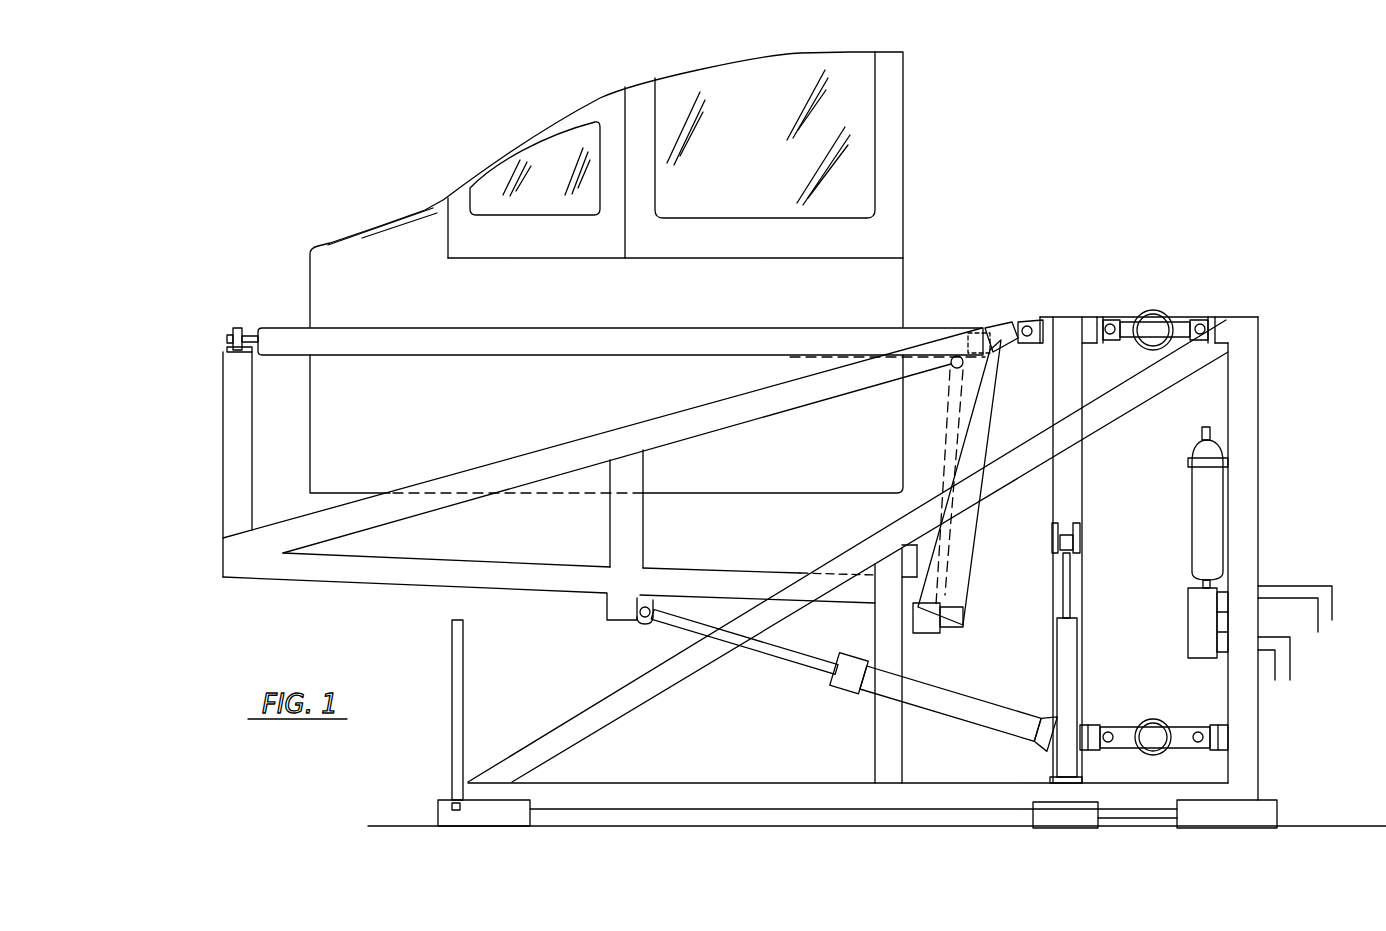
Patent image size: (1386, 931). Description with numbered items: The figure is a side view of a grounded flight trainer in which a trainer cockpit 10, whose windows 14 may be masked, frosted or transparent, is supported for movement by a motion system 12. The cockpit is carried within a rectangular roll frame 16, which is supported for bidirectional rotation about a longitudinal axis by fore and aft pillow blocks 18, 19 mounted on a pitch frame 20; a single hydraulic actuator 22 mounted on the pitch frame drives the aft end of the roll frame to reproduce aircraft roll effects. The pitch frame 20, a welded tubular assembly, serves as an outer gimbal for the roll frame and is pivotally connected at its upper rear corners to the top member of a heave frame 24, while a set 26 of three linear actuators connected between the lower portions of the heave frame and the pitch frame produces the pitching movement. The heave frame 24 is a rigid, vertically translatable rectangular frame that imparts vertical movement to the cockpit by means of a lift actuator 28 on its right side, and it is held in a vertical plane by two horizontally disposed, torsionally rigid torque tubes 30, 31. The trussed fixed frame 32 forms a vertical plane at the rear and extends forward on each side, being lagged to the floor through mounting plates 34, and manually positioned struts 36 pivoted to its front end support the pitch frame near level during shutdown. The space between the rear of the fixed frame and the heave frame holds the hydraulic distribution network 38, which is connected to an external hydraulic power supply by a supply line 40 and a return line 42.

The trainer cockpit 10 is at (645, 311).
The motion system 12 is at (782, 557).
The windows 14 is at (553, 201).
The roll frame 16 is at (287, 335).
The pillow block 18 is at (236, 328).
The pillow block 19 is at (983, 327).
The pitch frame 20 is at (633, 543).
The hydraulic actuator 22 is at (950, 583).
The heave frame 24 is at (1072, 466).
The set of linear actuators 26 is at (940, 697).
The lift actuator 28 is at (1068, 675).
The torque tube 30 is at (1163, 310).
The torque tube 31 is at (1150, 717).
The fixed frame 32 is at (1247, 388).
The mounting plates 34 is at (440, 823).
The strut 36 is at (463, 677).
The distribution network 38 is at (1180, 571).
The supply line 40 is at (1307, 585).
The return line 42 is at (1290, 652).